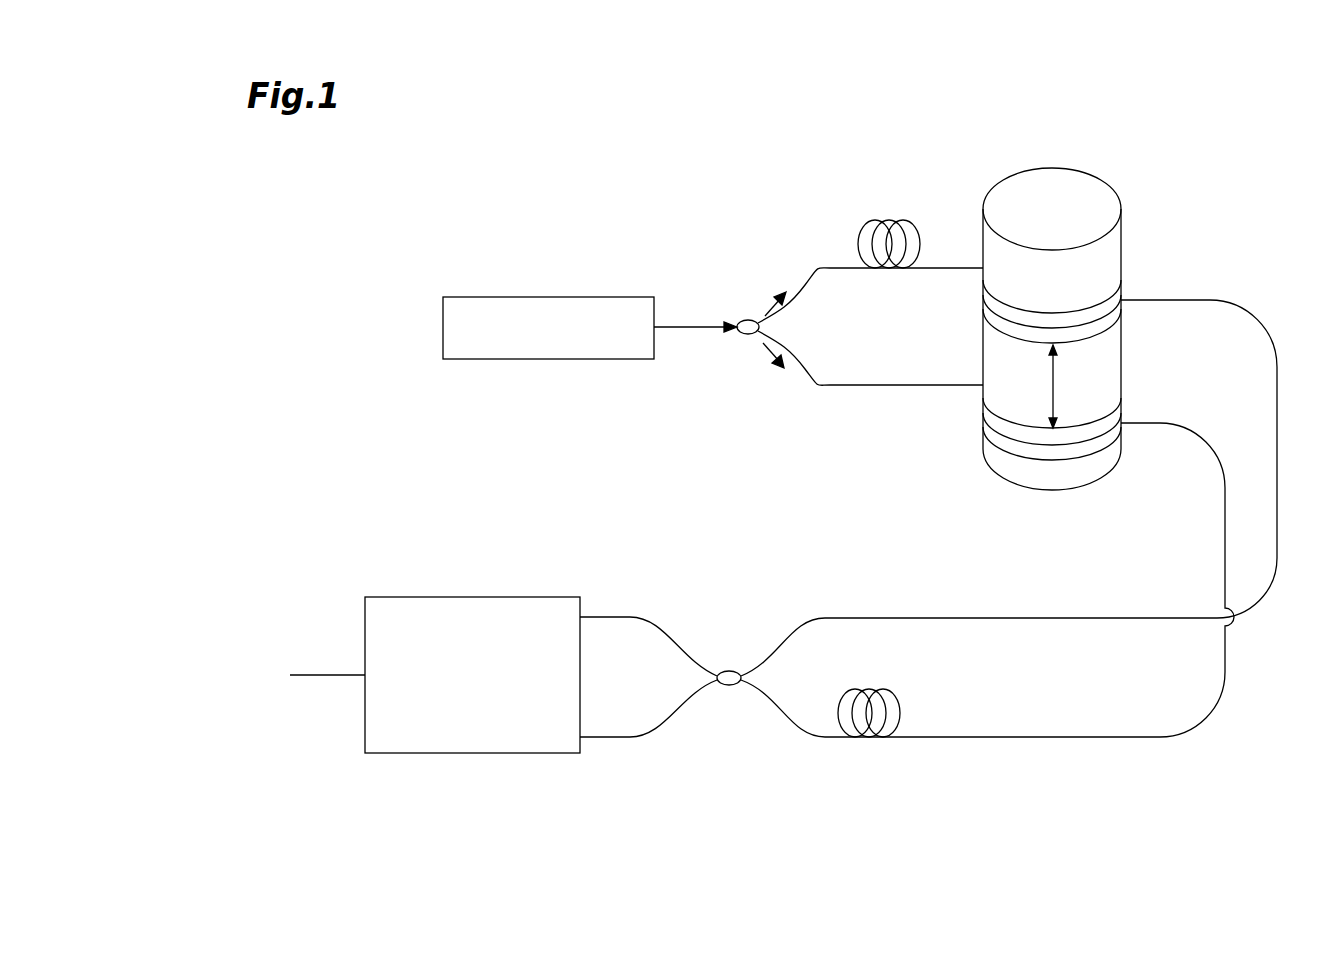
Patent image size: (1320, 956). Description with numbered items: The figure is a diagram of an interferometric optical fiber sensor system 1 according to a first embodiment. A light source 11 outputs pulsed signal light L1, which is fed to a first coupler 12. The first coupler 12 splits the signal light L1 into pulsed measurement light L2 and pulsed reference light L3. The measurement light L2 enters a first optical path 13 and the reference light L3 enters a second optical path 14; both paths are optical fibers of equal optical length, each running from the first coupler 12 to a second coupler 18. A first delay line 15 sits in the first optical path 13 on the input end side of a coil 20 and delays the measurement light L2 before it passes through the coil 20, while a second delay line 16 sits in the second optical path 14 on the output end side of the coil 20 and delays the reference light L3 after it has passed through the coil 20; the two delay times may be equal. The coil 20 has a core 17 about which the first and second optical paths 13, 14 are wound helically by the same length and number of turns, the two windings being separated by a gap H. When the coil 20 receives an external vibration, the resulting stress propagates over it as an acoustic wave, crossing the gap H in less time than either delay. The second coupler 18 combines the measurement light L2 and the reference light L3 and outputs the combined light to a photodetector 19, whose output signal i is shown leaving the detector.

The interferometric optical fiber sensor system 1 is at (1113, 120).
The light source 11 is at (538, 296).
The first coupler 12 is at (746, 320).
The first optical path 13 is at (825, 268).
The second optical path 14 is at (830, 390).
The first delay line 15 is at (890, 220).
The second delay line 16 is at (872, 688).
The core 17 is at (1092, 185).
The second coupler 18 is at (732, 670).
The photodetector 19 is at (480, 595).
The coil 20 is at (1123, 227).
The signal light L1 is at (695, 315).
The measurement light L2 is at (765, 303).
The reference light L3 is at (767, 357).
The gap H is at (1061, 386).
The current i is at (319, 675).